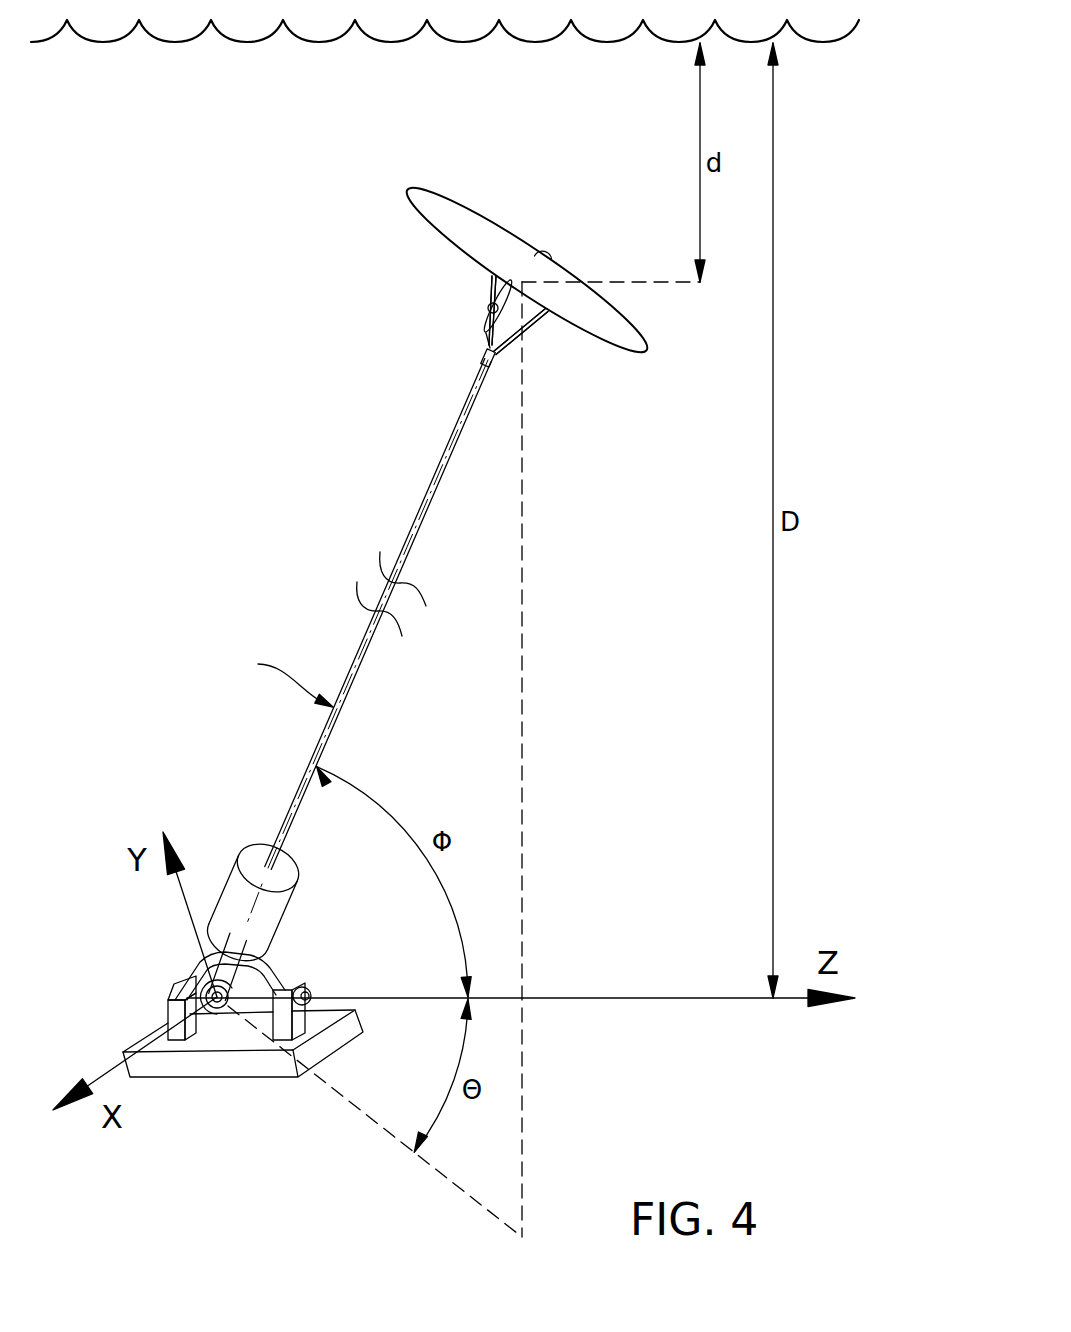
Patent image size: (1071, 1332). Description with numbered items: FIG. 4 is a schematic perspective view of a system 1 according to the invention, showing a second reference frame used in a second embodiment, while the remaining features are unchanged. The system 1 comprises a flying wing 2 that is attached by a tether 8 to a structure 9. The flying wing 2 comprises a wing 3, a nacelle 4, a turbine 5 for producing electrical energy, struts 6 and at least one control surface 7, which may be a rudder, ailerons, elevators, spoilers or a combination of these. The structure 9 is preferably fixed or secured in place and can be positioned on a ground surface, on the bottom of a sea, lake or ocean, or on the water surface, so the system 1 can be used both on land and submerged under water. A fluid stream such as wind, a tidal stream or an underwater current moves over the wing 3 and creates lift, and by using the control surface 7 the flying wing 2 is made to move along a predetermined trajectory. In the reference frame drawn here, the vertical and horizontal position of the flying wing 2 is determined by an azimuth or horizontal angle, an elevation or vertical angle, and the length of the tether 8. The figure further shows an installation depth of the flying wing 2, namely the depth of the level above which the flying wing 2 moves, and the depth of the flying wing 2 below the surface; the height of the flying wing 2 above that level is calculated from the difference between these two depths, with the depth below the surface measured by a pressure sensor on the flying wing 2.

The system 1 is at (150, 325).
The flying wing 2 is at (580, 245).
The wing 3 is at (498, 237).
The nacelle 4 is at (523, 293).
The turbine 5 is at (518, 315).
The struts 6 is at (398, 336).
The control surface 7 is at (490, 320).
The tether 8 is at (432, 485).
The structure 9 is at (140, 962).